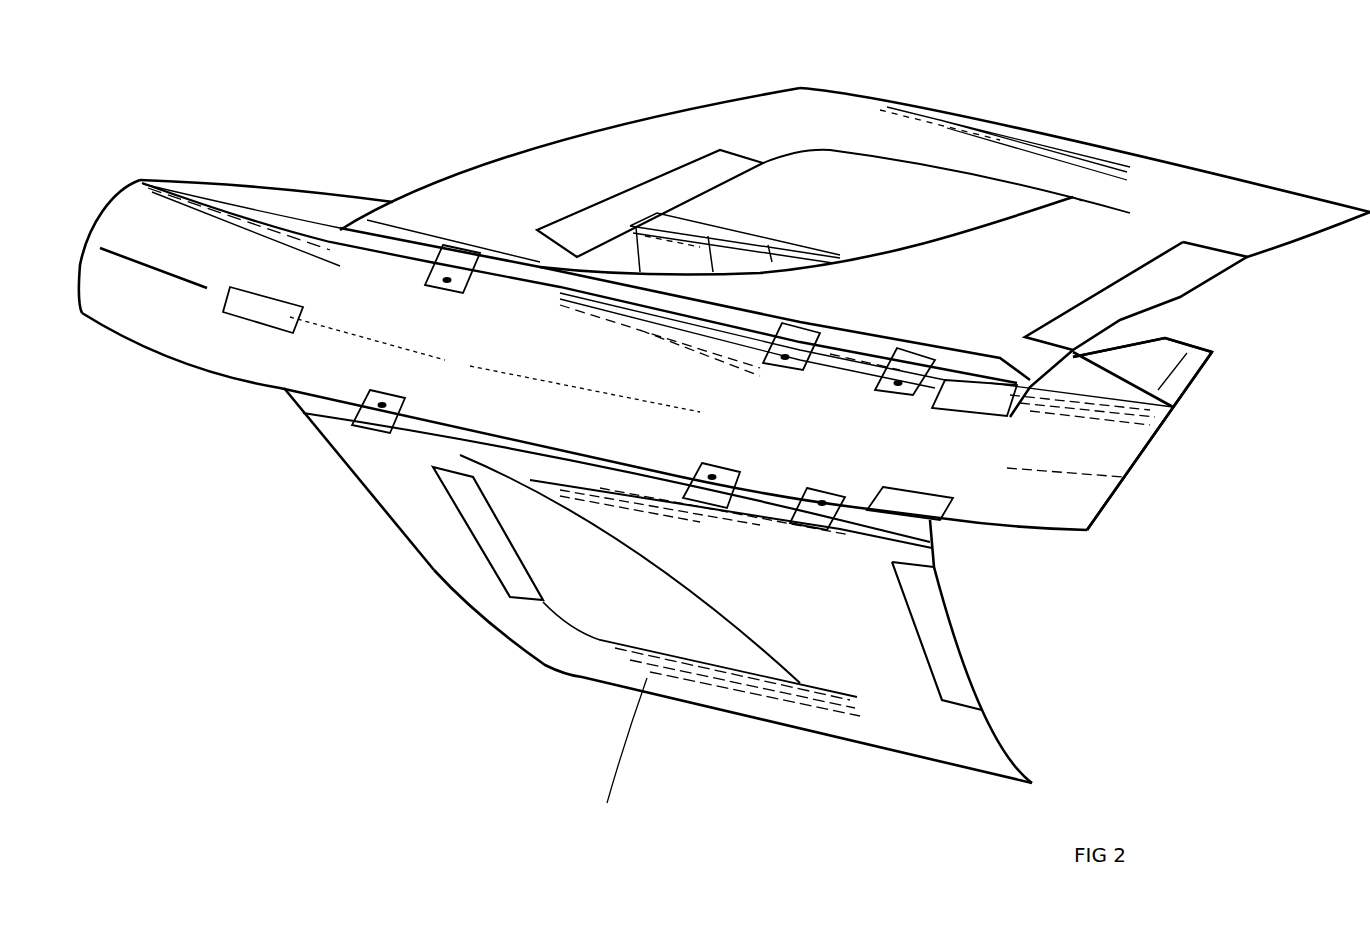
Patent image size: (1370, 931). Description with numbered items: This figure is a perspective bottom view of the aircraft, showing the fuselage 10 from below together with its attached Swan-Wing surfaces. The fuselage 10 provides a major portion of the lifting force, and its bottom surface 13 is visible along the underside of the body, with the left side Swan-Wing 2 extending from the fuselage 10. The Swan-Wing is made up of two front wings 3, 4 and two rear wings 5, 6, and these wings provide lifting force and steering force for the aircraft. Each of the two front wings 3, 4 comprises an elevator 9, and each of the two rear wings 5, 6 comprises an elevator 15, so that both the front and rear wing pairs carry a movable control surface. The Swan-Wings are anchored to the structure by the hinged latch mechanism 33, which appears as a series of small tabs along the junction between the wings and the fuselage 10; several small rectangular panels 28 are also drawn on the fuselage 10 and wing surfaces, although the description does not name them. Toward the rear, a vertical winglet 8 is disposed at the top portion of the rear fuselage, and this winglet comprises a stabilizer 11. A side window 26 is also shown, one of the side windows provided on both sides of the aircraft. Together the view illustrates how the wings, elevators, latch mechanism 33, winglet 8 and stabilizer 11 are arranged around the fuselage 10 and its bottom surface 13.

The left side Swan-Wing 2 is at (1027, 170).
The front wing 3 is at (430, 497).
The front wing 4 is at (608, 167).
The rear wing 5 is at (817, 613).
The rear wing 6 is at (1100, 257).
The vertical winglet 8 is at (1143, 370).
The elevator 9 is at (663, 190).
The fuselage 10 is at (345, 193).
The stabilizer 11 is at (1190, 370).
The bottom surface 13 is at (200, 340).
The elevator 15 is at (1148, 280).
The side window 26 is at (730, 240).
The mounting tab 28 is at (270, 320).
The hinged latch mechanism 33 is at (445, 272).